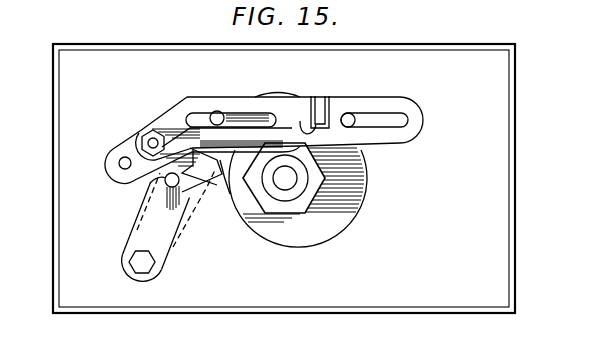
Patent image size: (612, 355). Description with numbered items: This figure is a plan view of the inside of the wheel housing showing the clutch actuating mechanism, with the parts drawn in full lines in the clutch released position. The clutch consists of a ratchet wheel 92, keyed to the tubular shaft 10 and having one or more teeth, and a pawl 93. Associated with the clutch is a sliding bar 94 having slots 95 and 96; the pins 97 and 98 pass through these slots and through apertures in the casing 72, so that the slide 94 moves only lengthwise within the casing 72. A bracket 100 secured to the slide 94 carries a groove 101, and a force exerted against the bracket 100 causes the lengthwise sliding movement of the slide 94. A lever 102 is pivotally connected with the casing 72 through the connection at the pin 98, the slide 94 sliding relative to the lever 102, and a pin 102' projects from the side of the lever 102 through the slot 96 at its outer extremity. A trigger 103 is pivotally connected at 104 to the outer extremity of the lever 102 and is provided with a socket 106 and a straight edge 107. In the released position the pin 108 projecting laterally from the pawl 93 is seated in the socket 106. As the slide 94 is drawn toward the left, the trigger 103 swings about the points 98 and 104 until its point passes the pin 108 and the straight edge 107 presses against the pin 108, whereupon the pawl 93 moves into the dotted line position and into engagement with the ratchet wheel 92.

The casing 72 is at (515, 190).
The ratchet wheel 92 is at (358, 210).
The tubular shaft 10 is at (302, 187).
The pawl 93 is at (145, 230).
The sliding bar 94 is at (408, 96).
The slot 95 is at (418, 122).
The slot 96 is at (188, 118).
The pin 97 is at (352, 117).
The pin 98 is at (220, 112).
The bracket 100 is at (322, 95).
The groove 101 is at (298, 126).
The lever 102 is at (188, 157).
The pin 102' is at (137, 126).
The trigger 103 is at (225, 167).
The pivot 104 is at (121, 167).
The socket 106 is at (152, 193).
The straight edge 107 is at (217, 177).
The pin 108 is at (148, 210).